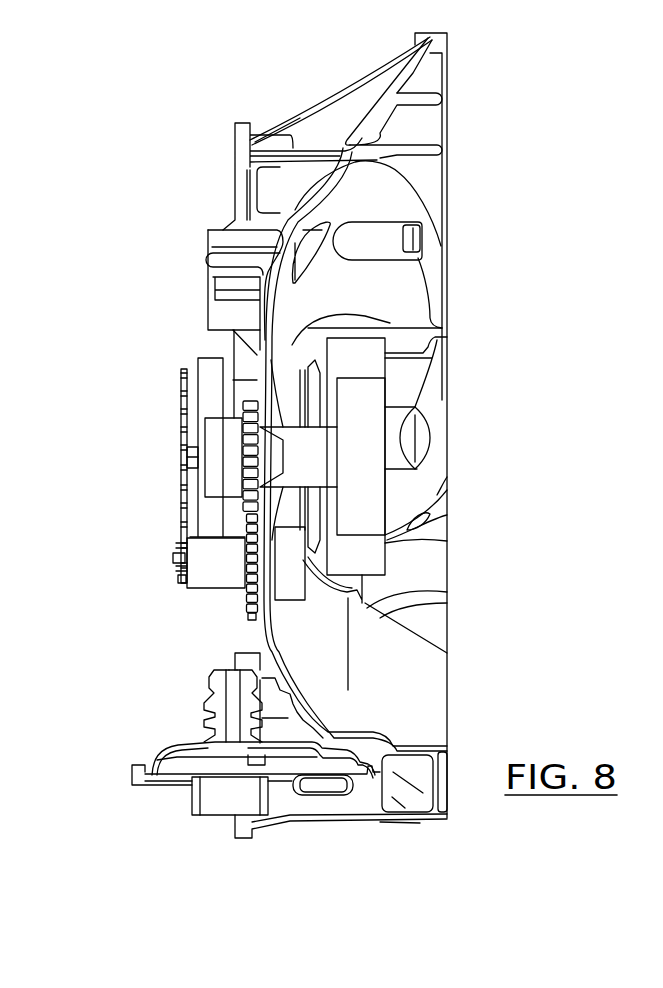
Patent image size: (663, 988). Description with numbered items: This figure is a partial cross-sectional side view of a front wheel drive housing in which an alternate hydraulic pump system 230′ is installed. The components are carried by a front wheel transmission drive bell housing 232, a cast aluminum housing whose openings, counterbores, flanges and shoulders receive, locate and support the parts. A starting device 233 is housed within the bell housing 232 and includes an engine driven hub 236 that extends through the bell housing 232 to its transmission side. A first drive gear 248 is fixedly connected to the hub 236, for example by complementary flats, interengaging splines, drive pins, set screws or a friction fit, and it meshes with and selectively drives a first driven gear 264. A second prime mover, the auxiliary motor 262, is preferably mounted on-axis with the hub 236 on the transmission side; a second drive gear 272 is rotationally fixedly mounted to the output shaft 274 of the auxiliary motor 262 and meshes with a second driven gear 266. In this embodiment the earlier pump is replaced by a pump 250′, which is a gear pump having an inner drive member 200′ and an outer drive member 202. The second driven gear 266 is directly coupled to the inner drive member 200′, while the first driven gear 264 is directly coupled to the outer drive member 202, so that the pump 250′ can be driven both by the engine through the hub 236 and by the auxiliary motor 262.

The front wheel transmission drive bell housing 232 is at (313, 108).
The alternate hydraulic pump system 230′ is at (84, 419).
The second drive gear 272 is at (178, 383).
The first drive gear 248 is at (253, 401).
The auxiliary motor 262 is at (212, 389).
The engine driven hub 236 is at (215, 437).
The output shaft 274 is at (192, 467).
The inner drive member 200′ is at (175, 560).
The second driven gear 266 is at (178, 573).
The pump 250′ is at (197, 588).
The outer drive member 202 is at (237, 582).
The first driven gear 264 is at (252, 615).
The starting device 233 is at (379, 449).